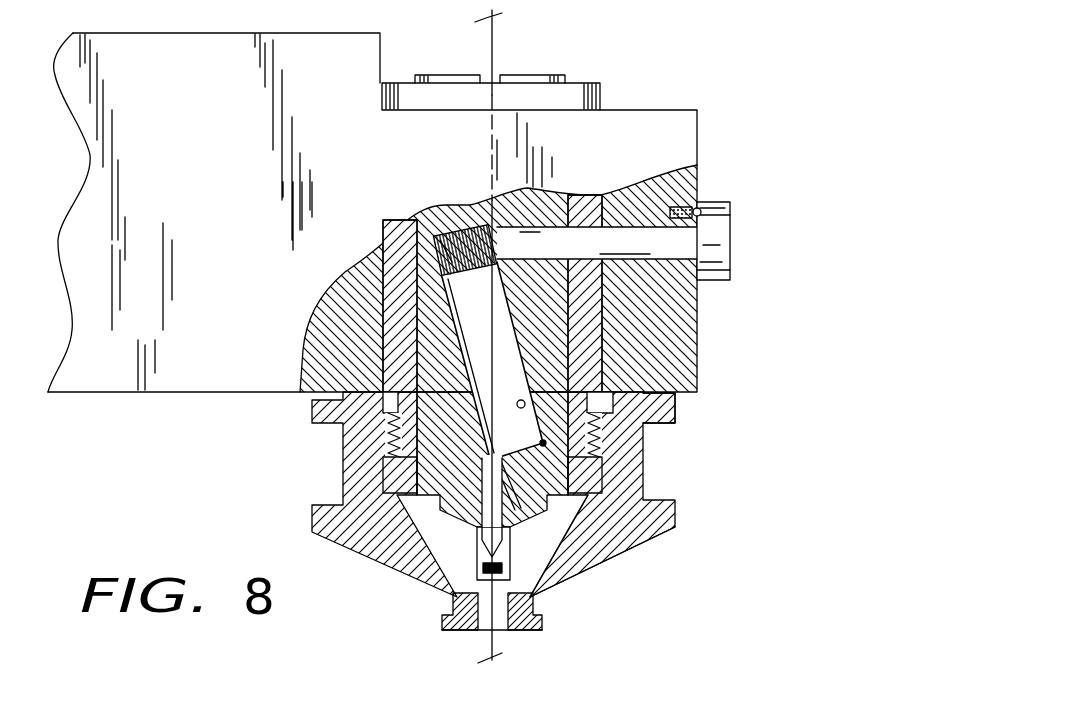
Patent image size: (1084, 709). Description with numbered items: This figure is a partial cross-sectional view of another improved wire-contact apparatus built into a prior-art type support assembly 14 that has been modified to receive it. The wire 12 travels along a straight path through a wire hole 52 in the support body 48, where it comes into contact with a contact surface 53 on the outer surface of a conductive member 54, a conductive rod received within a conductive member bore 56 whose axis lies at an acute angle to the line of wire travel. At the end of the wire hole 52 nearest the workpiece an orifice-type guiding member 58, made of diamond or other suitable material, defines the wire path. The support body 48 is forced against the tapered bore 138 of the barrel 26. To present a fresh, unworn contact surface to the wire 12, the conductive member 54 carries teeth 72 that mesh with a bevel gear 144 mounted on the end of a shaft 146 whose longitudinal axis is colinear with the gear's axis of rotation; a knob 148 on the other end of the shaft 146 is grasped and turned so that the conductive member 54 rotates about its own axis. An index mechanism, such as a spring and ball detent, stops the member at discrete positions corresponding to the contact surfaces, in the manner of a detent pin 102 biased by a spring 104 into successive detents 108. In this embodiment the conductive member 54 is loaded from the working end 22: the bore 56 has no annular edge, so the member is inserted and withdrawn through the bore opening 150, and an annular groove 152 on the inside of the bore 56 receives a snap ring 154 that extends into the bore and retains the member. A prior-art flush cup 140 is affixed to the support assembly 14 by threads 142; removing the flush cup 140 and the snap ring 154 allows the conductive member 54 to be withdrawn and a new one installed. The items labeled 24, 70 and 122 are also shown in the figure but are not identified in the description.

The wire 12 is at (493, 47).
The support assembly 14 is at (212, 405).
The working end 22 is at (355, 565).
The torch body 24 is at (192, 204).
The barrel 26 is at (620, 303).
The support body 48 is at (430, 470).
The wire hole 52 is at (476, 527).
The contact surface 53 is at (465, 300).
The conductive member 54 is at (506, 362).
The conductive member bore 56 is at (658, 423).
The guiding member 58 is at (452, 594).
The nozzle tip 70 is at (510, 611).
The teeth 72 is at (450, 250).
The detent pin 102 is at (698, 210).
The spring 104 is at (678, 207).
The detents 108 is at (737, 207).
The nozzle orifice face 122 is at (530, 632).
The tapered bore 138 is at (397, 447).
The flush cup 140 is at (600, 550).
The threads 142 is at (390, 423).
The bevel gear 144 is at (490, 230).
The shaft 146 is at (620, 240).
The knob 148 is at (722, 243).
The bore opening 150 is at (580, 513).
The annular groove 152 is at (613, 440).
The snap ring 154 is at (600, 470).